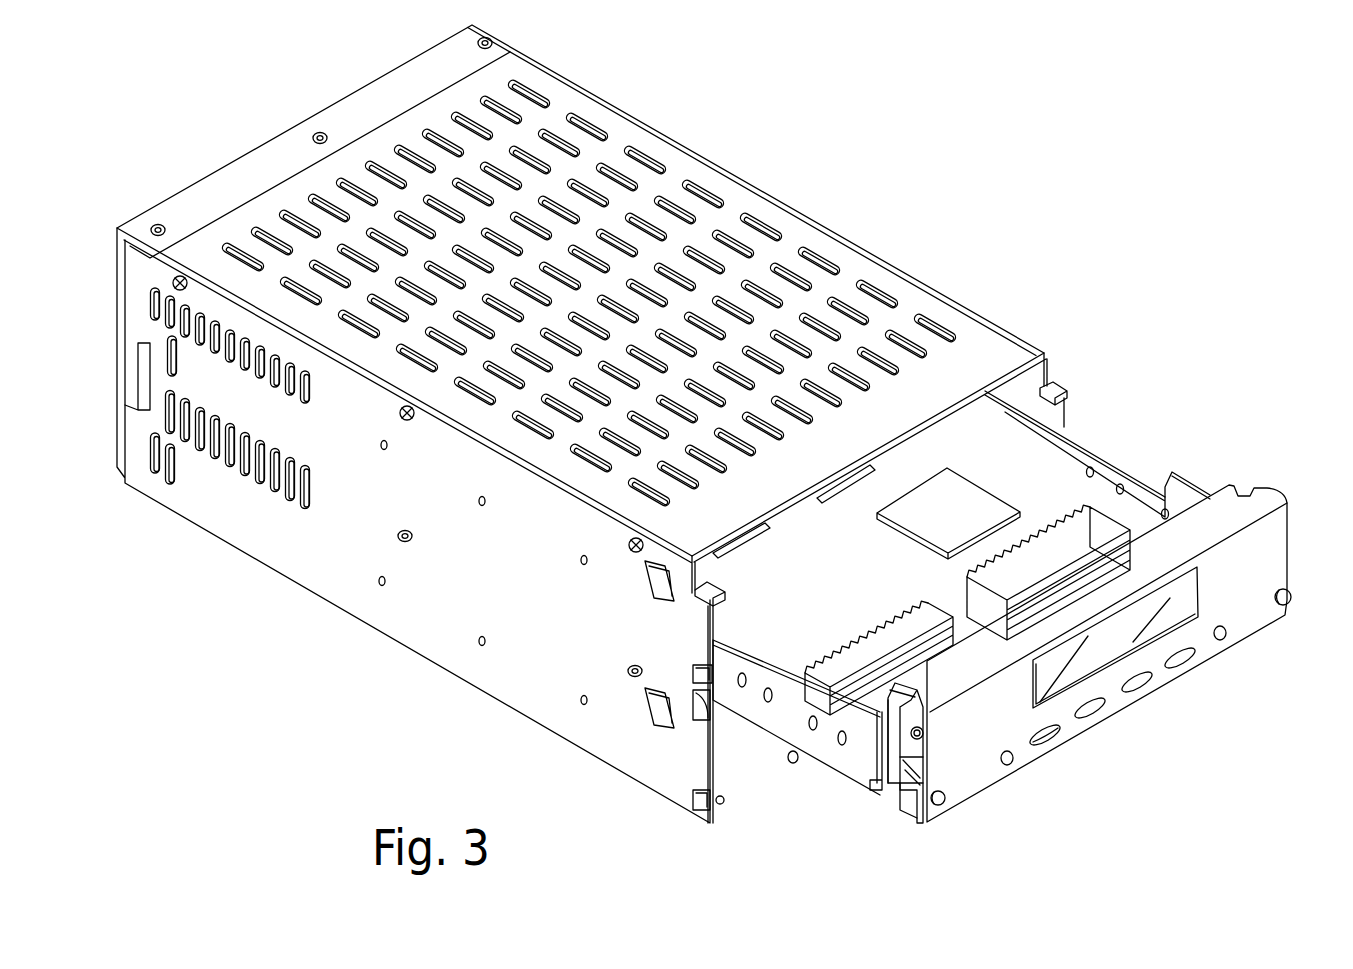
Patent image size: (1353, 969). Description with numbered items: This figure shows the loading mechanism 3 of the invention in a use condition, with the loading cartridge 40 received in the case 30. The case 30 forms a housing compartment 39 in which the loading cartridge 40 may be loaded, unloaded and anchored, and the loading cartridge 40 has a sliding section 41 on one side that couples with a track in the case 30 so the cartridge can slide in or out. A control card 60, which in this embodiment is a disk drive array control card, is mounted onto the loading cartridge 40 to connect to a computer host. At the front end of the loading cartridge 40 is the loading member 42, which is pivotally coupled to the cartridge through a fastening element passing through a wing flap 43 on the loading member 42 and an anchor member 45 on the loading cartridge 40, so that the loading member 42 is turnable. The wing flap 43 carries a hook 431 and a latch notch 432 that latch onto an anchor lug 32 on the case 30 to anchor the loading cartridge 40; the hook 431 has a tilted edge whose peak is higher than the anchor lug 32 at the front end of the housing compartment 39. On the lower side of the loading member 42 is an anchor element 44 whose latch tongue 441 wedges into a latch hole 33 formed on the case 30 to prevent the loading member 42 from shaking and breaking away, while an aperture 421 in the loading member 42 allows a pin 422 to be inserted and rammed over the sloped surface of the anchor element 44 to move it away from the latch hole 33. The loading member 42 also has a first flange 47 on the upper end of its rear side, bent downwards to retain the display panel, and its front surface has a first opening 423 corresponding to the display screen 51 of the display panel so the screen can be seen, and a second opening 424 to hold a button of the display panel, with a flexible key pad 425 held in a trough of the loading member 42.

The loading mechanism 3 is at (976, 182).
The case 30 is at (417, 603).
The anchor lug 32 is at (1066, 390).
The latch hole 33 is at (697, 672).
The housing compartment 39 is at (980, 593).
The loading cartridge 40 is at (1125, 462).
The sliding section 41 is at (1147, 480).
The loading member 42 is at (1139, 675).
The first flange 47 is at (1200, 530).
The first opening 423 is at (1118, 652).
The display screen 51 is at (1080, 656).
The second opening 424 is at (1030, 735).
The flexible key pad 425 is at (1052, 740).
The wing flap 43 is at (934, 762).
The hook 431 is at (902, 688).
The latch notch 432 is at (910, 676).
The anchor element 44 is at (905, 790).
The latch tongue 441 is at (925, 772).
The pin 422 is at (941, 808).
The anchor member 45 is at (878, 742).
The aperture 421 is at (722, 803).
The control card 60 is at (835, 528).